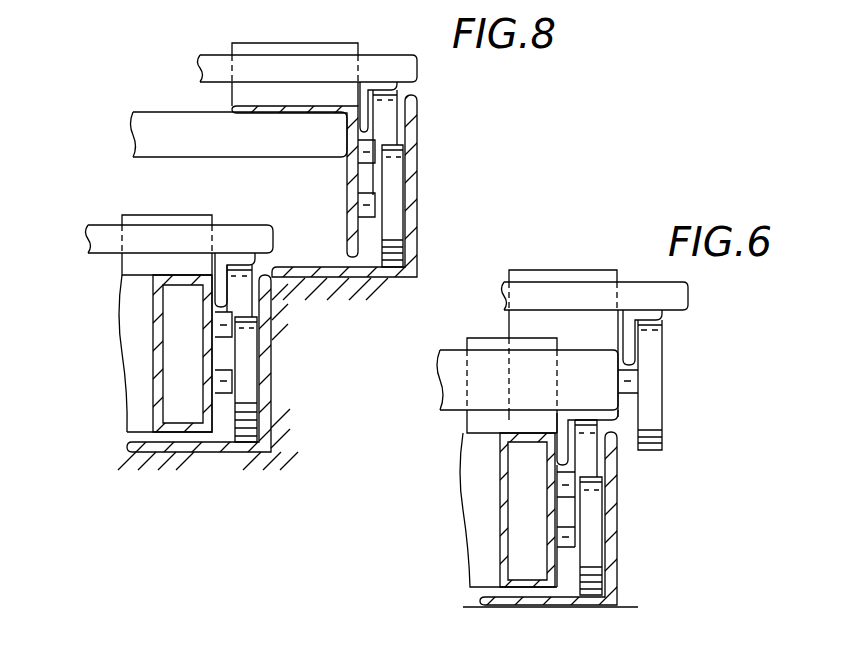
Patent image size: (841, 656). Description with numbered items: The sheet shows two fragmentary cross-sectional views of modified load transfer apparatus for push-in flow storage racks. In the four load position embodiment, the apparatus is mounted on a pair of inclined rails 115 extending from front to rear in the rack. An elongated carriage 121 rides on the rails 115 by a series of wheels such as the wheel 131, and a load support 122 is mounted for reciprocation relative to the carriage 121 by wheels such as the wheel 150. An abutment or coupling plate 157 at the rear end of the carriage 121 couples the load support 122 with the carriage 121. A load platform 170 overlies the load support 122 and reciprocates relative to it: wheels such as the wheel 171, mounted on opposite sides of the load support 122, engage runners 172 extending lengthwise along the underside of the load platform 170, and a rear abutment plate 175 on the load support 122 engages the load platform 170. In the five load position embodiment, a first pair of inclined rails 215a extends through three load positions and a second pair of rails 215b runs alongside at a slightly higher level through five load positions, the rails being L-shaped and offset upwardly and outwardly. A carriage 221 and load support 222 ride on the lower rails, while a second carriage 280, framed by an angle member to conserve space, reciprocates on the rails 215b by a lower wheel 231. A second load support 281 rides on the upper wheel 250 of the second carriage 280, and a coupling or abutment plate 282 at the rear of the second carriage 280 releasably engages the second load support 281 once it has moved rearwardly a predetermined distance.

In FIG. 8, the coupling or abutment plate 282 is at (280, 50).
In FIG. 8, the second load support 281 is at (412, 68).
In FIG. 8, the second carriage 280 is at (223, 142).
In FIG. 8, the wheel 250 is at (387, 117).
In FIG. 8, the wheel 231 is at (395, 162).
In FIG. 8, the first pair of rails 215a is at (310, 519).
In FIG. 8, the second pair of rails 215b is at (515, 259).
In FIG. 8, the load support 222 is at (312, 216).
In FIG. 8, the carriage 221 is at (135, 390).
In FIG. 6, the rear abutment plate 175 is at (547, 278).
In FIG. 6, the load platform 170 is at (673, 300).
In FIG. 6, the runners 172 is at (630, 342).
In FIG. 6, the wheel 171 is at (647, 392).
In FIG. 6, the abutment or coupling plate 157 is at (488, 343).
In FIG. 6, the load support 122 is at (452, 390).
In FIG. 6, the carriage 121 is at (480, 522).
In FIG. 6, the wheel 150 is at (587, 457).
In FIG. 6, the wheel 131 is at (590, 526).
In FIG. 6, the inclined rails 115 is at (607, 597).